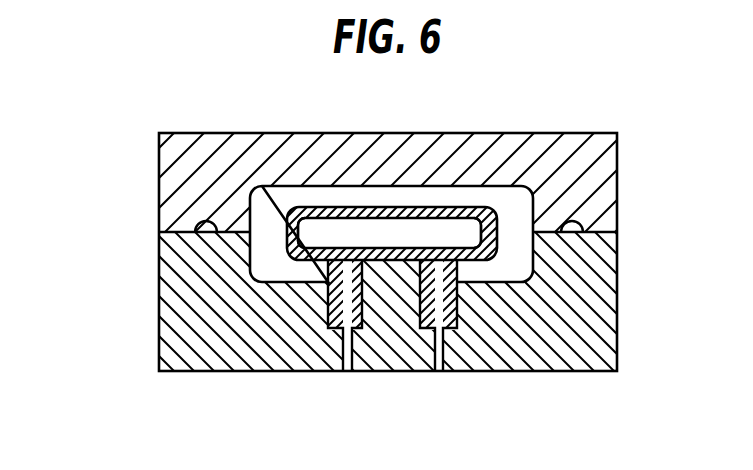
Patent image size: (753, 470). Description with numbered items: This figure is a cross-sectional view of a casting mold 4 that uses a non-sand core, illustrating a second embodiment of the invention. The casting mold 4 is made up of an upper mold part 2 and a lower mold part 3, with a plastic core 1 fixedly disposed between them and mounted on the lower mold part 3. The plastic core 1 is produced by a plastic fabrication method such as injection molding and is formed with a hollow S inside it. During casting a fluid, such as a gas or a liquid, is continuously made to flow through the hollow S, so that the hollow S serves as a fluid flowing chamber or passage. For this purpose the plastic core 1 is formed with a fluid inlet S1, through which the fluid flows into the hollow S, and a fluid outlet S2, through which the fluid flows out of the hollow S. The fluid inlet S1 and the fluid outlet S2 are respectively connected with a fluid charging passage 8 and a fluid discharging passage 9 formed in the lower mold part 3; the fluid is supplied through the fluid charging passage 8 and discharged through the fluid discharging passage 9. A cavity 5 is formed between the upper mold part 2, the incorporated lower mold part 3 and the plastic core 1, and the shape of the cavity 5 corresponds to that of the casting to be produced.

The casting mold 4 is at (144, 209).
The upper mold part 2 is at (600, 195).
The lower mold part 3 is at (598, 312).
The cavity 5 is at (275, 211).
The plastic core 1 is at (482, 201).
The hollow S is at (395, 233).
The fluid inlet S1 is at (348, 248).
The fluid outlet S2 is at (440, 252).
The fluid charging passage 8 is at (347, 371).
The fluid discharging passage 9 is at (439, 371).